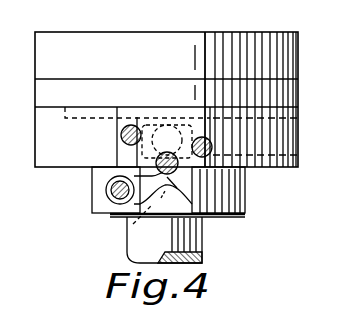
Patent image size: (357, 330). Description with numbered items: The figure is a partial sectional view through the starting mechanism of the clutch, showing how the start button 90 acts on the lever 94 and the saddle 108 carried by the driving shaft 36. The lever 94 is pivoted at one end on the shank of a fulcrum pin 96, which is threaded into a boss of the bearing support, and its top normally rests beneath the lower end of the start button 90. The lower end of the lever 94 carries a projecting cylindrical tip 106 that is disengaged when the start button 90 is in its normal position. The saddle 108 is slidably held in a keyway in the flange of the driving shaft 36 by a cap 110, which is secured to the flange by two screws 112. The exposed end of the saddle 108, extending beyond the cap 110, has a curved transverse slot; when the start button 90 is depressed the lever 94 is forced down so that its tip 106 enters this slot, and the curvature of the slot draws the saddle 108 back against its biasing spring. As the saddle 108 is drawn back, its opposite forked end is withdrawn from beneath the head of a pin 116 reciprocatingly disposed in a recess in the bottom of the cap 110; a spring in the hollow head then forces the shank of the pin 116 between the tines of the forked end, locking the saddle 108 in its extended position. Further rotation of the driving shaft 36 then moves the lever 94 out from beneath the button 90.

The driving shaft 36 is at (192, 238).
The start button 90 is at (157, 160).
The lever 94 is at (112, 200).
The fulcrum pin 96 is at (106, 190).
The cylindrical tip 106 is at (131, 226).
The saddle 108 is at (186, 202).
The cap 110 is at (121, 136).
The screws 112 is at (200, 137).
The pin 116 is at (298, 150).